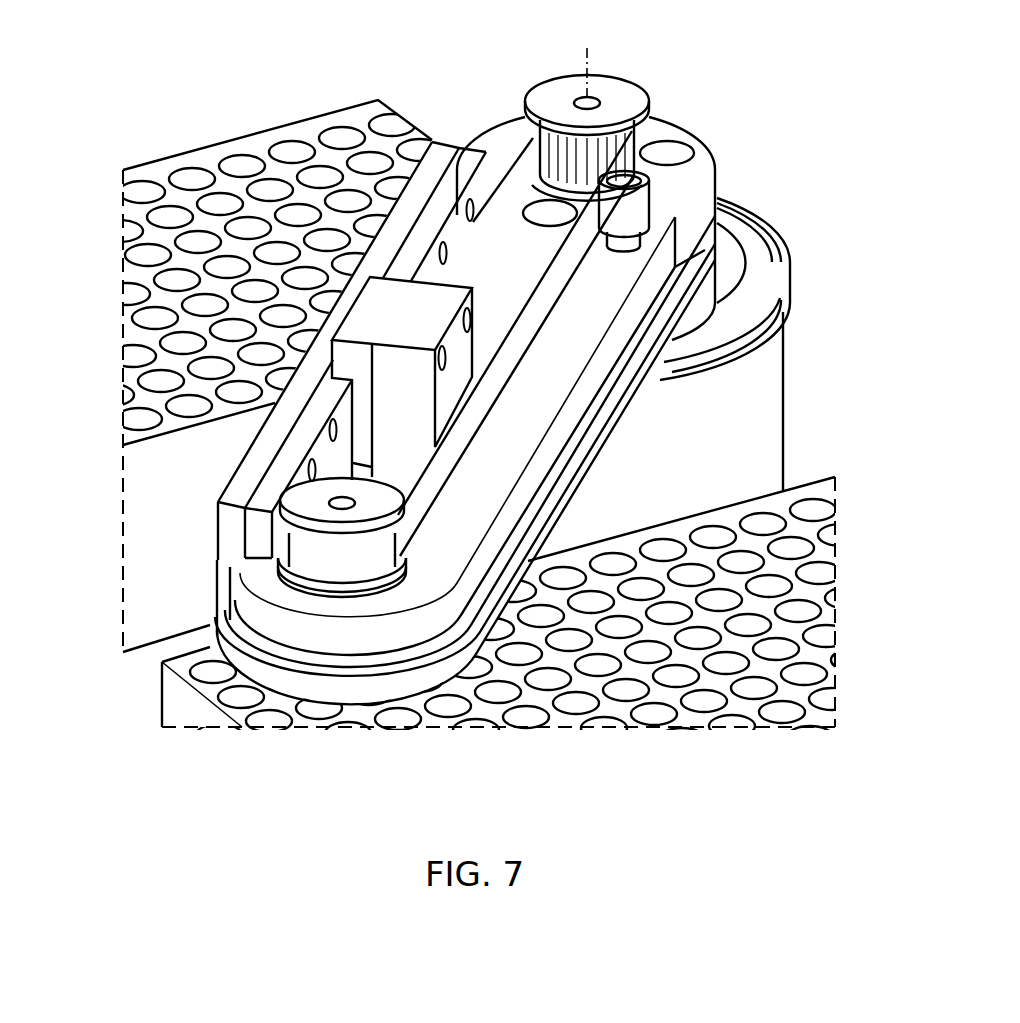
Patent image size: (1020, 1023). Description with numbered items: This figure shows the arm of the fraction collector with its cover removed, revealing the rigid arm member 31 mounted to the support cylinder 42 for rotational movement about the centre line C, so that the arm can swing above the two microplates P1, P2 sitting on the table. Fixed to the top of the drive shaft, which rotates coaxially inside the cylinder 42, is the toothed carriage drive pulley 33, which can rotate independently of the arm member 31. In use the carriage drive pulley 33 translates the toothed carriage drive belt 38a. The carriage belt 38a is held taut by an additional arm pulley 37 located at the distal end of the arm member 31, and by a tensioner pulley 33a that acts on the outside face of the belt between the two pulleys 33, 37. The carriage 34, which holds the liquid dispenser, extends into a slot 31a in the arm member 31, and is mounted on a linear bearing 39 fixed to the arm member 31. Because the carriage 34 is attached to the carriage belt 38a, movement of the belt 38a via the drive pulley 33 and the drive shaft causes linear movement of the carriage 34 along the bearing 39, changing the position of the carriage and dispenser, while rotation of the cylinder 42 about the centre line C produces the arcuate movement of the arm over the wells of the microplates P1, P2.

The arm member 31 is at (640, 297).
The slot 31a is at (533, 307).
The carriage drive pulley 33 is at (623, 97).
The tensioner pulley 33a is at (640, 207).
The carriage 34 is at (415, 330).
The arm pulley 37 is at (362, 527).
The carriage drive belt 38a is at (497, 370).
The linear bearing 39 is at (283, 470).
The support cylinder 42 is at (707, 287).
The microplate P1 is at (207, 143).
The microplate P2 is at (830, 555).
The centre line C is at (585, 59).